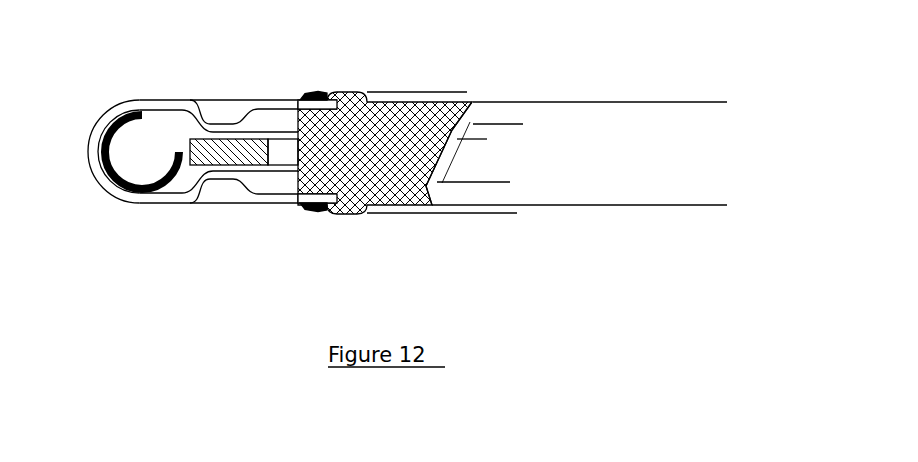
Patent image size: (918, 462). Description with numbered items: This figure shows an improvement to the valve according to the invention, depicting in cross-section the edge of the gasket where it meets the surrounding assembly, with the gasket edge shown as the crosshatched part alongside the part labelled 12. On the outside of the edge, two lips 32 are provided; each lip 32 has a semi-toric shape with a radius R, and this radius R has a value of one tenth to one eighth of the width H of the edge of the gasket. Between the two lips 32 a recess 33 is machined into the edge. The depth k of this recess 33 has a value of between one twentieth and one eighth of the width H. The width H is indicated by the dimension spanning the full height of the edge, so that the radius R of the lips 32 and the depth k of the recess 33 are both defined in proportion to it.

The crosshatched sealing insert 12 is at (418, 110).
The lips 32 is at (475, 117).
The recess 33 is at (452, 137).
The radius R is at (473, 105).
The depth k is at (453, 164).
The width H is at (706, 102).